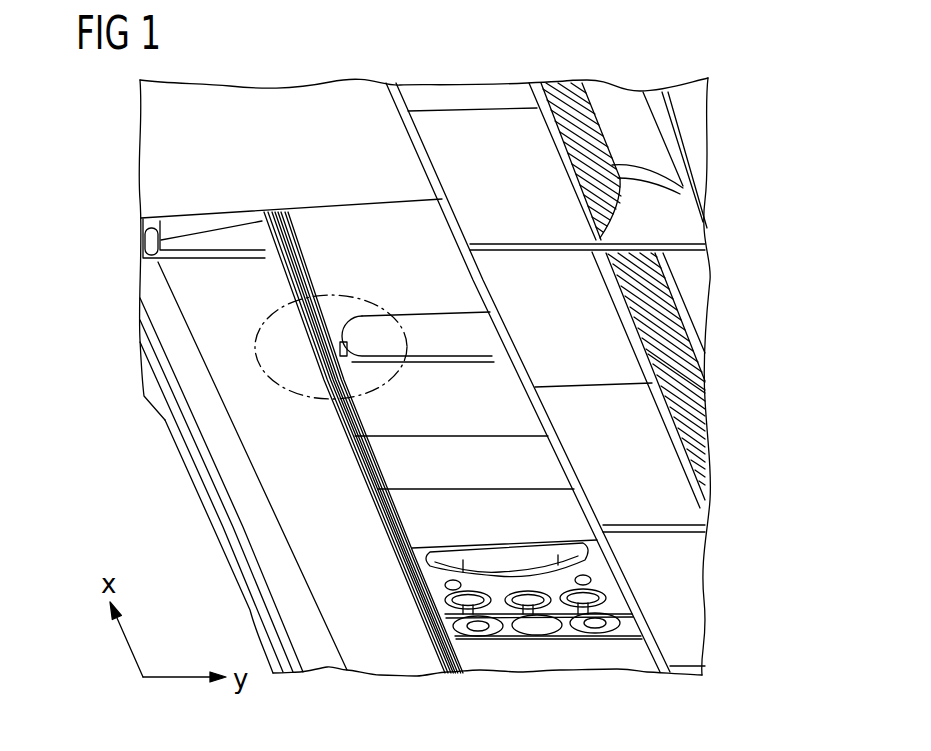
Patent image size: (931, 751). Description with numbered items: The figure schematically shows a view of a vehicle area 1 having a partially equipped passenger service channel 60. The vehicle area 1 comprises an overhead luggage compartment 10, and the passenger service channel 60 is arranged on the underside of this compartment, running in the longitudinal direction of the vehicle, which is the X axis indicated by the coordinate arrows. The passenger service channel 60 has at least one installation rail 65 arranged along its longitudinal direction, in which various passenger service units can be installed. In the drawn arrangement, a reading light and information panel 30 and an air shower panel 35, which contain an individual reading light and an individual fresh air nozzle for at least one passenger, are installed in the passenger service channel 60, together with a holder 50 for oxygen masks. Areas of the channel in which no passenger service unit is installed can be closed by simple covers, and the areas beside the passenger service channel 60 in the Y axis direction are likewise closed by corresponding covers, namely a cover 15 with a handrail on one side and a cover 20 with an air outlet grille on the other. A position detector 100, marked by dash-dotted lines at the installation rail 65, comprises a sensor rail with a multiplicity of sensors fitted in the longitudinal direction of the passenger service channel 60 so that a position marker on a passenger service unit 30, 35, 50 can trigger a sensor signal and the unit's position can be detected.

The vehicle area 1 is at (744, 82).
The overhead luggage compartment 10 is at (185, 158).
The cover with a handrail 15 is at (582, 289).
The cover with an air outlet grille 20 is at (280, 439).
The reading light and information panel 30 is at (574, 580).
The air shower panel 35 is at (590, 652).
The holder for oxygen masks 50 is at (472, 401).
The passenger service channel 60 is at (376, 229).
The installation rail 65 is at (143, 240).
The position detector 100 is at (258, 330).